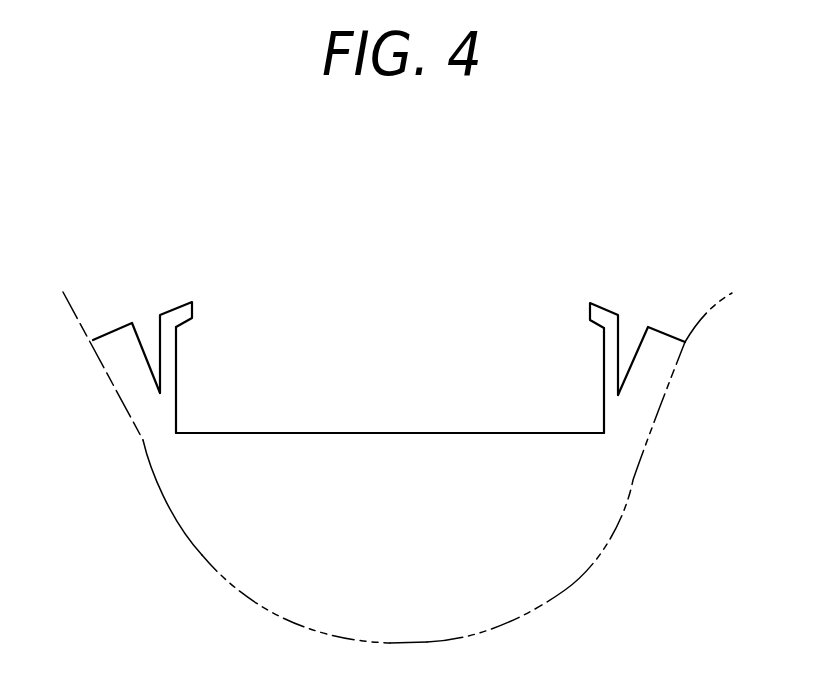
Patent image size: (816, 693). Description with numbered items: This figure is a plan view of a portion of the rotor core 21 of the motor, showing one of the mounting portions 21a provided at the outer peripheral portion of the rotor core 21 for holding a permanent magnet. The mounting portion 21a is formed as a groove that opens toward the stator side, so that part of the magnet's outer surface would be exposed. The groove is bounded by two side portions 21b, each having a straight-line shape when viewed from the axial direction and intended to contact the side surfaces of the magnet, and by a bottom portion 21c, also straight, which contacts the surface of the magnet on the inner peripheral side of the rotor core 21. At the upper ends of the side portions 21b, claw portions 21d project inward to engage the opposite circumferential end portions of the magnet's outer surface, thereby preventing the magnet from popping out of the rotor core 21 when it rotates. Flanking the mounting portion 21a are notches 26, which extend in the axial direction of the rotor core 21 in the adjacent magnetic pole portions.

The rotor core 21 is at (228, 547).
The mounting portion 21a is at (389, 326).
The side portion 21b is at (176, 372).
The bottom portion 21c is at (405, 430).
The claw portion 21d is at (182, 312).
The notch 26 is at (140, 340).